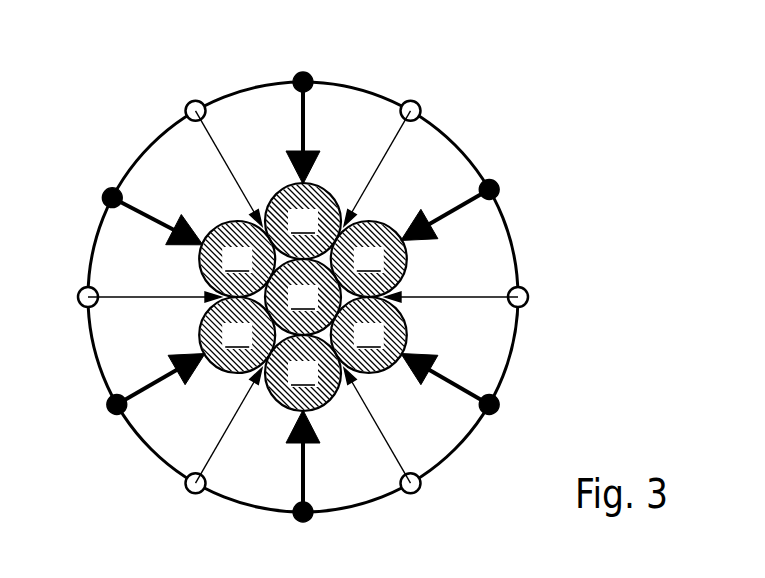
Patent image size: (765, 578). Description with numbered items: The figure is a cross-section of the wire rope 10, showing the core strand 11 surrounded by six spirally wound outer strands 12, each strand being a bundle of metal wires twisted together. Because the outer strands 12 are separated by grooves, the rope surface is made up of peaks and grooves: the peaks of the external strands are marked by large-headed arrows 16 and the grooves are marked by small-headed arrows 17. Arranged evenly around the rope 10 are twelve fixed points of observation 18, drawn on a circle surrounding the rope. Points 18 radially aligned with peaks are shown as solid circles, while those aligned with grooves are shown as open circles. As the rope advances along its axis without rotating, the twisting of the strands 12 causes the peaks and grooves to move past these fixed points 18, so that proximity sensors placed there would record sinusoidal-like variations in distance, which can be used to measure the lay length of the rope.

The wire rope 10 is at (303, 315).
The core strand 11 is at (303, 297).
The outer strands 12 is at (303, 297).
The large-headed arrows 16 is at (304, 132).
The small-headed arrows 17 is at (168, 302).
The points of observation 18 is at (302, 72).